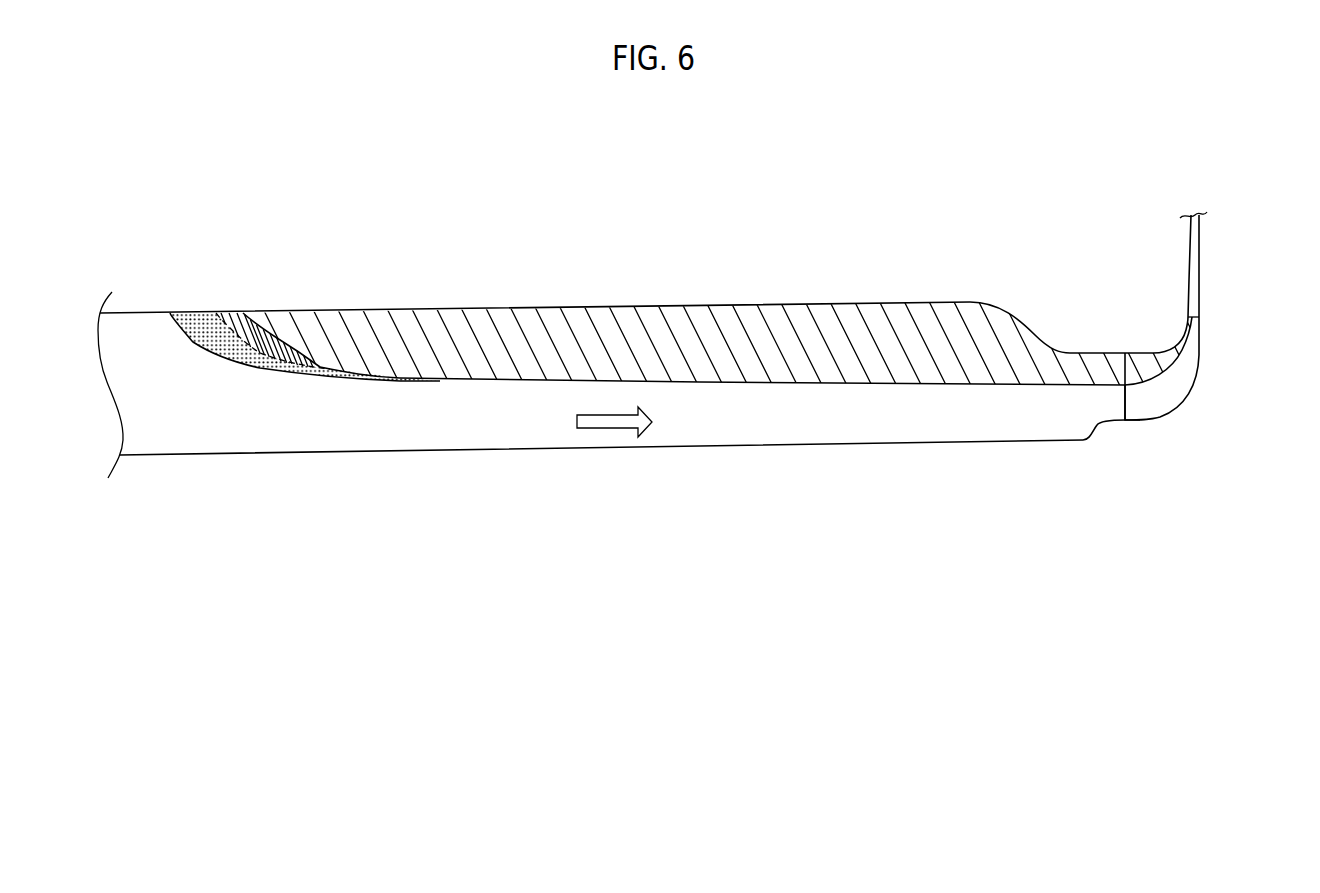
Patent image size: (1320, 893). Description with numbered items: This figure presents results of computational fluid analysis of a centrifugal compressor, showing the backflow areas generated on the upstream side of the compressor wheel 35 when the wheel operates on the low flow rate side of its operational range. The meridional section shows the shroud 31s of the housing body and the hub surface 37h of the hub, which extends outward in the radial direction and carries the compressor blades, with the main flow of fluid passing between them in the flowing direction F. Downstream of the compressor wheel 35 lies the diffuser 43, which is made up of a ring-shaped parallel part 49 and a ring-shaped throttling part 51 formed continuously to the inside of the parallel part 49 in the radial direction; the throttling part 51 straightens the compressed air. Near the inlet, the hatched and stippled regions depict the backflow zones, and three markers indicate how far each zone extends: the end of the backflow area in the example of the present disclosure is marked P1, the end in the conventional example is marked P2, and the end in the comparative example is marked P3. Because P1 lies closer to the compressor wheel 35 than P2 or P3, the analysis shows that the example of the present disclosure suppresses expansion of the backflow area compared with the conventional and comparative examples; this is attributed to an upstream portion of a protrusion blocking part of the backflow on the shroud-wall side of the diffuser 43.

The end of the backflow area in the example of the present disclosure P1 is at (243, 313).
The end of the backflow area in the conventional example P2 is at (170, 313).
The end of the backflow area in the comparative example P3 is at (216, 313).
The shroud 31s is at (1146, 355).
The compressor wheel 35 is at (1125, 398).
The hub surface 37h is at (1170, 401).
The diffuser 43 is at (1219, 300).
The parallel part 49 is at (1193, 238).
The throttling part 51 is at (1195, 334).
The flowing direction of a main flow of fluid F is at (600, 428).